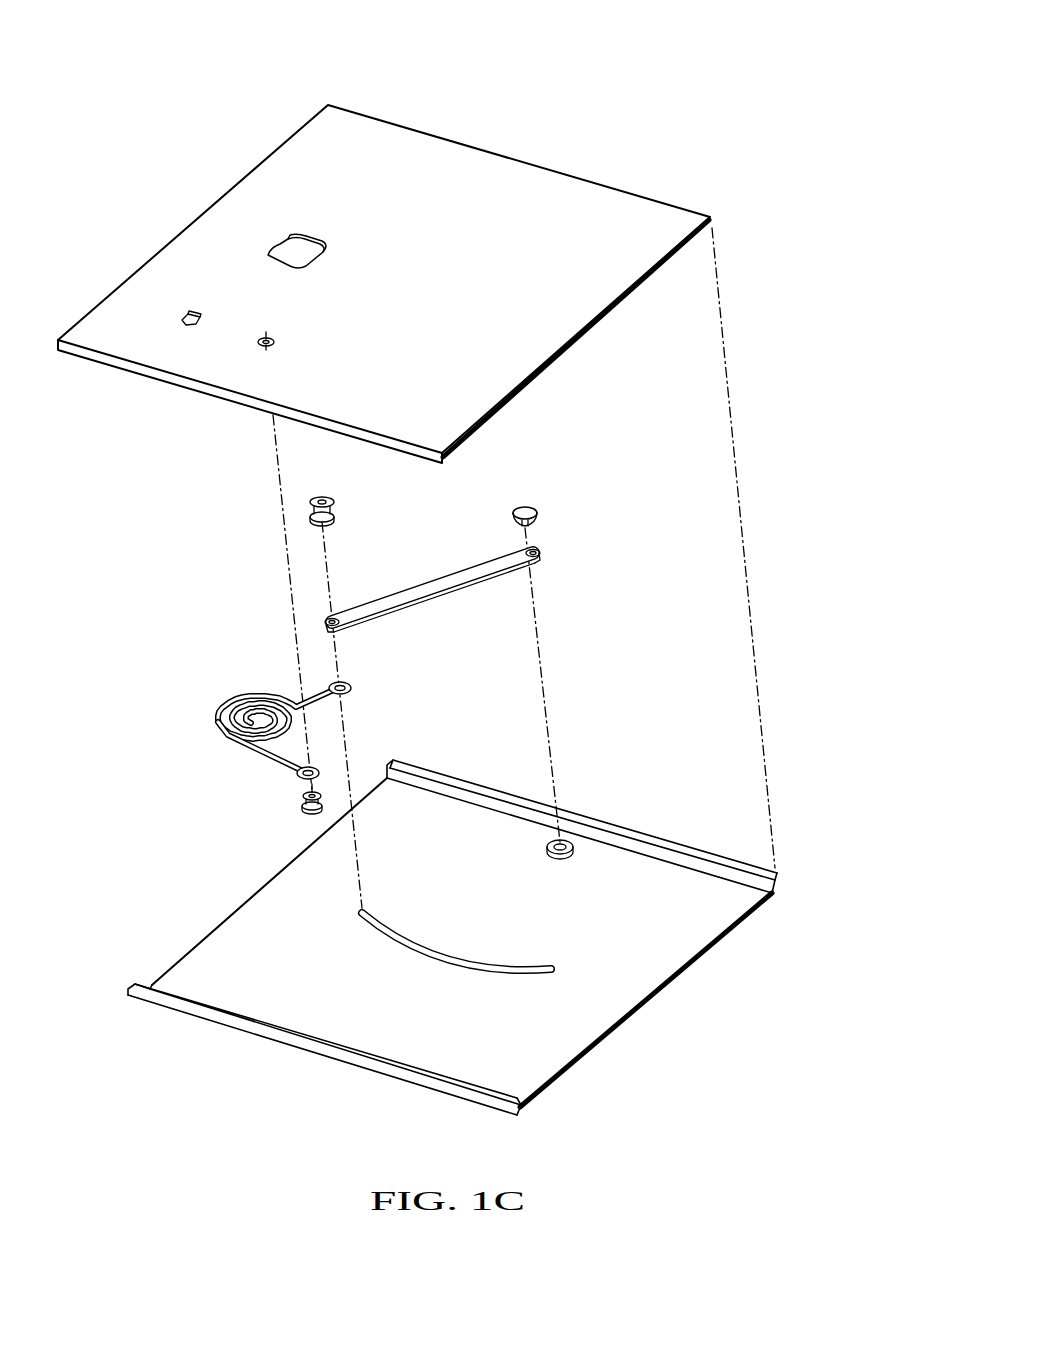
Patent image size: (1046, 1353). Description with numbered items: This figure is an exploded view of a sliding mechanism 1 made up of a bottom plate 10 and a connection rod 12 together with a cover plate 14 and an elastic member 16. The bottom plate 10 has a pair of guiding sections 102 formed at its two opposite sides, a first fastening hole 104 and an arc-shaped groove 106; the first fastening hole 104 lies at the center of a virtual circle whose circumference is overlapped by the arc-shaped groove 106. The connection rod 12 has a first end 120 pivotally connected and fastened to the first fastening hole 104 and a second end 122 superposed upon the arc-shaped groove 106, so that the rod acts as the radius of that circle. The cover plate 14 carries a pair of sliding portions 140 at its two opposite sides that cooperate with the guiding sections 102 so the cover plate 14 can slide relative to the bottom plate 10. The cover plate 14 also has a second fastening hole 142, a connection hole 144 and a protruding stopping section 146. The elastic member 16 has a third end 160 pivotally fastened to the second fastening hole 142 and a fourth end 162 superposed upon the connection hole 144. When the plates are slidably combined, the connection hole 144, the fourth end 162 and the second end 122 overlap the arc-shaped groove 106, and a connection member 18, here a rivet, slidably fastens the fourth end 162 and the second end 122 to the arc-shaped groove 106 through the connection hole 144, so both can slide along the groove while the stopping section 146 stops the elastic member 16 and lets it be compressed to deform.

The hinge assembly 1 is at (598, 68).
The bottom plate 10 is at (180, 880).
The guiding sections 102 is at (520, 1108).
The first fastening hole 104 is at (567, 842).
The arc-shaped groove 106 is at (427, 958).
The connection rod 12 is at (462, 546).
The first end 120 is at (540, 558).
The second end 122 is at (340, 630).
The cover plate 14 is at (316, 70).
The sliding portions 140 is at (710, 224).
The second fastening hole 142 is at (263, 345).
The connection hole 144 is at (285, 240).
The stopping section 146 is at (187, 322).
The elastic member 16 is at (222, 668).
The third end 160 is at (303, 777).
The fourth end 162 is at (350, 688).
The connection member 18 is at (334, 514).